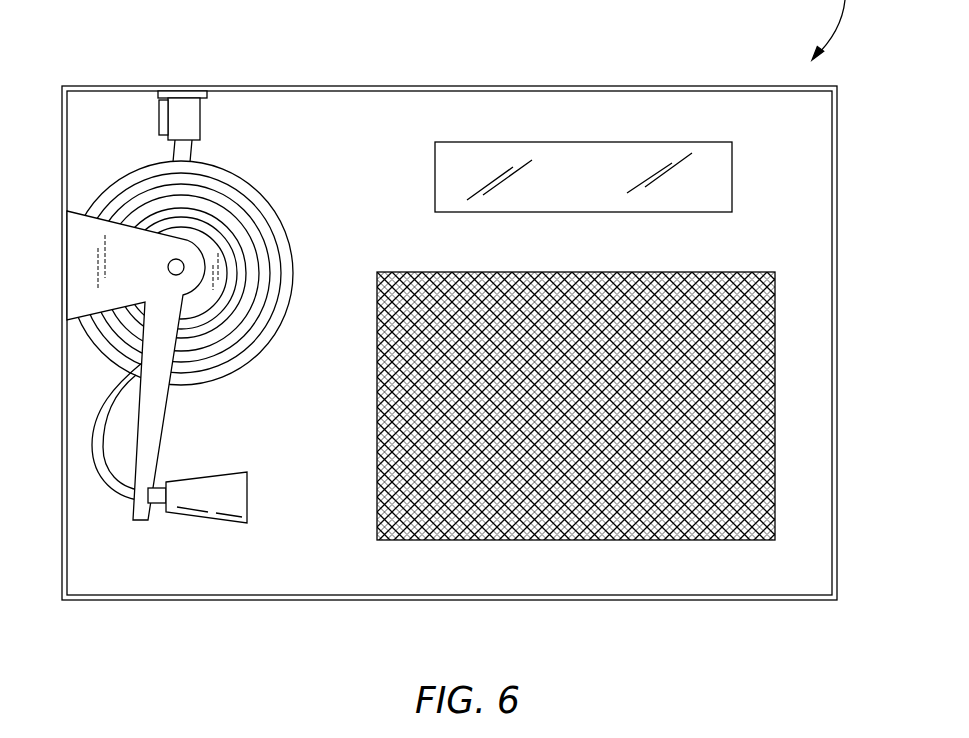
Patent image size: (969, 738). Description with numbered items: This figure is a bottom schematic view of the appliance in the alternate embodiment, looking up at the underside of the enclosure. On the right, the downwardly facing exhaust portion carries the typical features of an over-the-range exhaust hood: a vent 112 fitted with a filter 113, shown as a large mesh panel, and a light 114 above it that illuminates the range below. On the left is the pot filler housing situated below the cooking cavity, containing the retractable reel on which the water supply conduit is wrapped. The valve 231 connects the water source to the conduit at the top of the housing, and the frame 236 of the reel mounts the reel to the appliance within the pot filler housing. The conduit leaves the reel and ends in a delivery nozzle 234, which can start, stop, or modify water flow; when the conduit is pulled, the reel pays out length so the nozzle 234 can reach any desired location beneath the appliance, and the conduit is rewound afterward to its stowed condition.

The vent 112 is at (654, 406).
The filter 113 is at (775, 412).
The light 114 is at (735, 174).
The valve 231 is at (200, 118).
The delivery nozzle 234 is at (212, 507).
The frame 236 is at (87, 265).